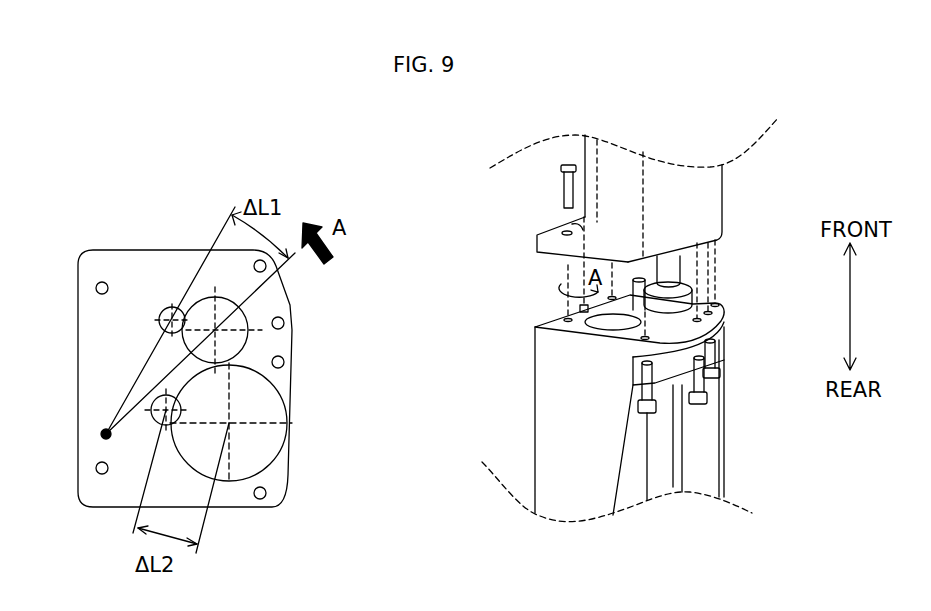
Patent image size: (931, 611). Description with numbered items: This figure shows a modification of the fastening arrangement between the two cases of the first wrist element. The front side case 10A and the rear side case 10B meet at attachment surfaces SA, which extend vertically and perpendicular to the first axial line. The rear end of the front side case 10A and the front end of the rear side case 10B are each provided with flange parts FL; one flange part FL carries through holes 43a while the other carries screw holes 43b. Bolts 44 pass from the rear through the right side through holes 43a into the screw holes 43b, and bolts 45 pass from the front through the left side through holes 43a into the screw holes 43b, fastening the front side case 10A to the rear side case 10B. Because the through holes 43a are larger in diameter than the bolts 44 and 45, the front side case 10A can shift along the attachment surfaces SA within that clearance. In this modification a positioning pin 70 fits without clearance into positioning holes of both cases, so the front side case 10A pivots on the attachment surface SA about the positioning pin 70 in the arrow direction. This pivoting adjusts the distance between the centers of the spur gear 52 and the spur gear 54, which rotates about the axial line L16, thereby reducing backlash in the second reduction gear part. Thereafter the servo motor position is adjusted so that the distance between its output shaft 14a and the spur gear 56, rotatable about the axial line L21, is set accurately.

The attachment surfaces SA is at (97, 333).
The spur gear 52 is at (172, 307).
The spur gear 54 is at (247, 313).
The spur gear 56 is at (273, 467).
The positioning pin 70 is at (104, 435).
The output shaft 14a is at (157, 418).
The axial line L16 is at (258, 343).
The axial line L21 is at (231, 418).
The front side case 10A is at (723, 195).
The rear side case 10B is at (542, 415).
The through holes 43a is at (558, 222).
The screw holes 43b is at (557, 321).
The bolts 44 is at (705, 388).
The bolts 45 is at (560, 180).
The flange parts FL is at (537, 242).